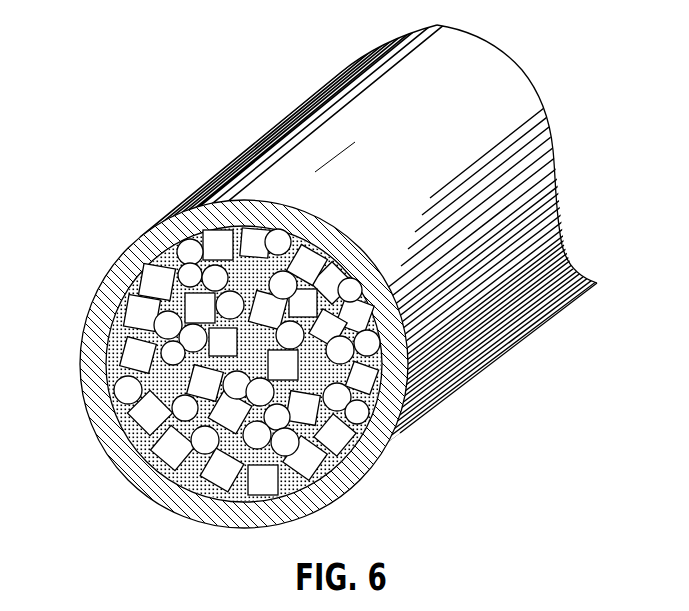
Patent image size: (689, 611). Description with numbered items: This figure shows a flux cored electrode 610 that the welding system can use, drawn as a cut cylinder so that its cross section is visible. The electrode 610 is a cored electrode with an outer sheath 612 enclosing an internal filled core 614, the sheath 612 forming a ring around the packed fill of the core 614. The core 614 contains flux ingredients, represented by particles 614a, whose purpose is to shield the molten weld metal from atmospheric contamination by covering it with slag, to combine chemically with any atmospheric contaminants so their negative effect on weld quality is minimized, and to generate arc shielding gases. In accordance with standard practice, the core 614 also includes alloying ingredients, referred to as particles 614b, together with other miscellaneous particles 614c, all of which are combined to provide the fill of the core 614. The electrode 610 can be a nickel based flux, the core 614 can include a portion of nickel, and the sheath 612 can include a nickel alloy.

The electrode 610 is at (560, 144).
The sheath 612 is at (138, 292).
The internal filled core 614 is at (310, 338).
The particles 614a is at (296, 262).
The particles 614b is at (280, 237).
The miscellaneous particles 614c is at (288, 481).